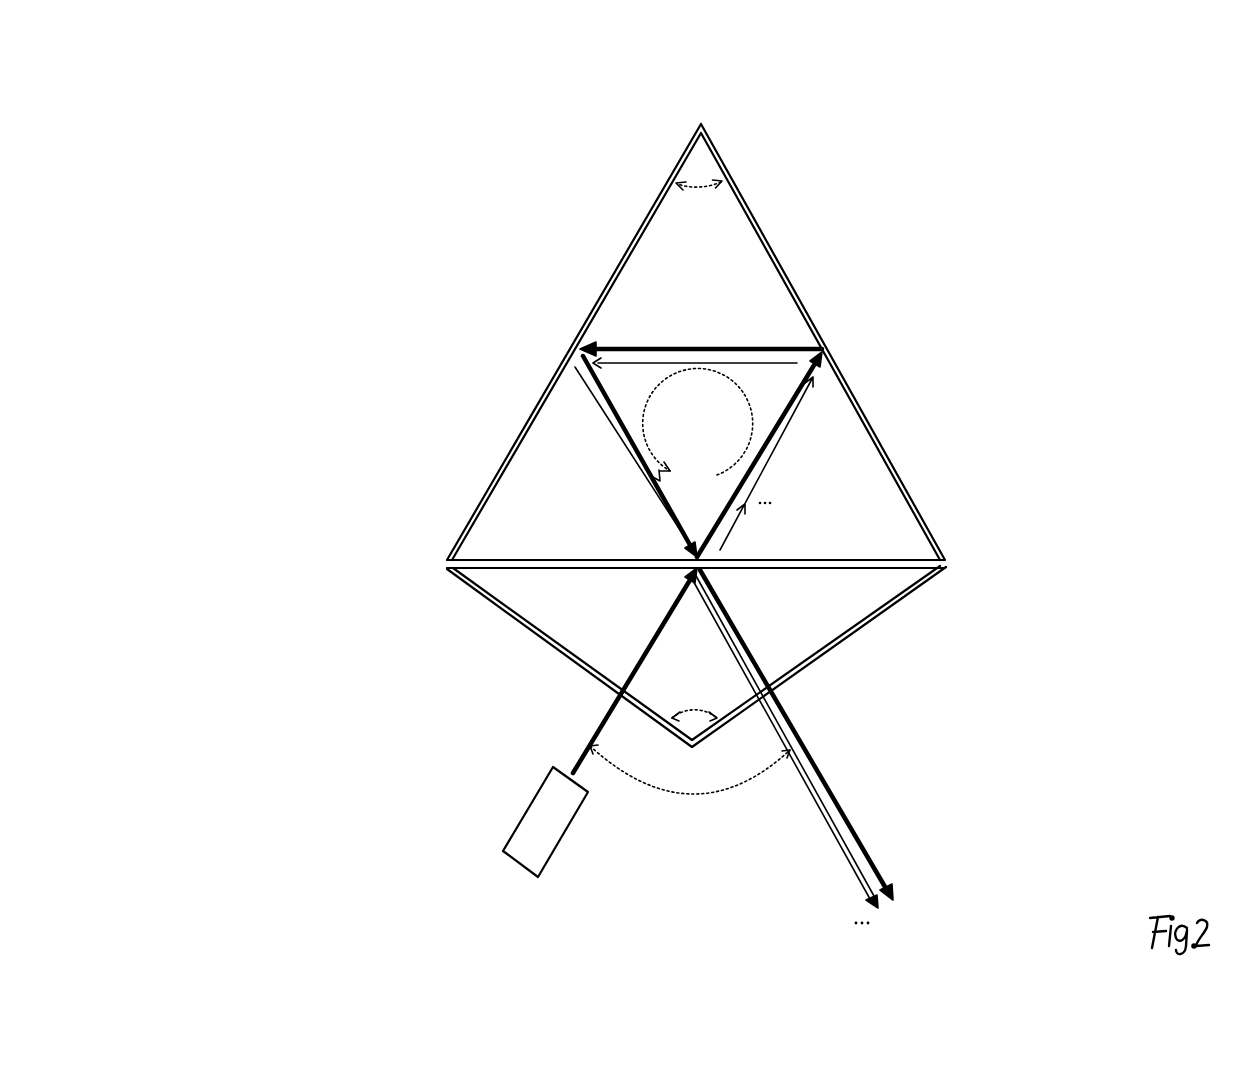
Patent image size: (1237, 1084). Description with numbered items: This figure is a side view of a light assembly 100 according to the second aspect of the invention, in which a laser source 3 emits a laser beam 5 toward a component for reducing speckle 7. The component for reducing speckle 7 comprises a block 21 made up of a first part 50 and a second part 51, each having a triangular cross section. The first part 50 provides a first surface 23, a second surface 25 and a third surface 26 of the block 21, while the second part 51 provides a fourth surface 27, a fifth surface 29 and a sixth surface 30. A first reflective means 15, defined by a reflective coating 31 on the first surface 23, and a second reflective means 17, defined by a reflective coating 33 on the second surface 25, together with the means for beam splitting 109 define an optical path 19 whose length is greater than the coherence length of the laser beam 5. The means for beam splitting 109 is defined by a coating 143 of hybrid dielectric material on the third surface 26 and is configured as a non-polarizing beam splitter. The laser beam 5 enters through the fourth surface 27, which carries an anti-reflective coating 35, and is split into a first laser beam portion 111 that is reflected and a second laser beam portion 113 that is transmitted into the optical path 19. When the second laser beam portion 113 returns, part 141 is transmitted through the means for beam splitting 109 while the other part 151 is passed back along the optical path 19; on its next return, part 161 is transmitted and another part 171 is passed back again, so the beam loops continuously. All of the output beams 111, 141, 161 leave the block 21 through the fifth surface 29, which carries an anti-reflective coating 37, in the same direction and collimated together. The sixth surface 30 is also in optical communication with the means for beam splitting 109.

The light assembly 100 is at (358, 200).
The component for reducing speckle 7 is at (736, 134).
The second reflective means 17 is at (676, 162).
The first reflective means 15 is at (730, 181).
The second surface 25 is at (640, 222).
The reflective coating 33 is at (623, 253).
The first surface 23 is at (758, 225).
The reflective coating 31 is at (785, 270).
The first part 50 is at (765, 323).
The block 21 is at (688, 325).
The optical path 19 is at (647, 412).
The second laser beam portion 113 is at (813, 371).
The other part of the second laser beam portion 151 is at (798, 397).
The another part of the laser beam portion 171 is at (730, 527).
The coating 143 is at (897, 562).
The means for beam splitting 109 is at (946, 566).
The third surface 26 is at (525, 560).
The anti-reflective coating 35 is at (448, 570).
The fourth surface 27 is at (477, 593).
The anti-reflective coating 37 is at (947, 573).
The fifth surface 29 is at (893, 604).
The sixth surface 30 is at (853, 570).
The second part 51 is at (773, 655).
The laser beam 5 is at (590, 737).
The laser source 3 is at (520, 823).
The first laser beam portion 111 is at (860, 840).
The part of the laser beam portion 161 is at (848, 823).
The part of the second laser beam portion 141 is at (872, 882).